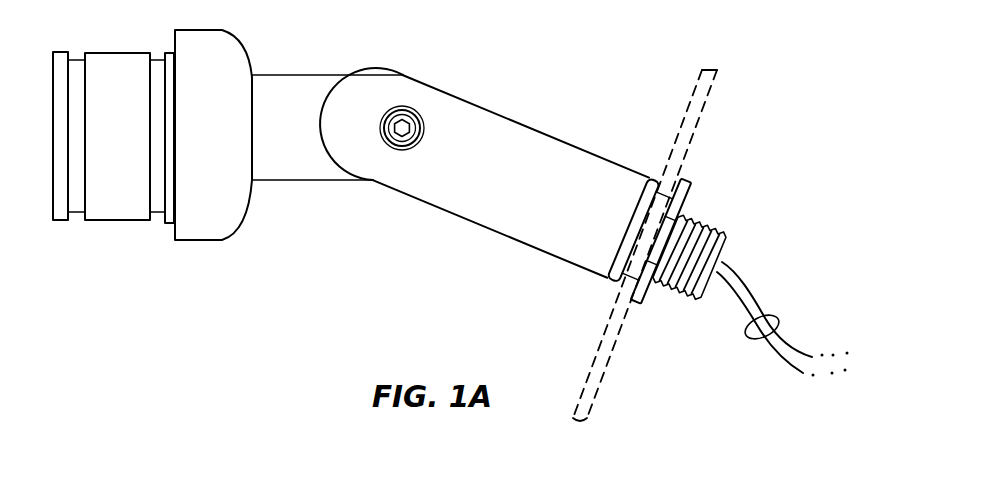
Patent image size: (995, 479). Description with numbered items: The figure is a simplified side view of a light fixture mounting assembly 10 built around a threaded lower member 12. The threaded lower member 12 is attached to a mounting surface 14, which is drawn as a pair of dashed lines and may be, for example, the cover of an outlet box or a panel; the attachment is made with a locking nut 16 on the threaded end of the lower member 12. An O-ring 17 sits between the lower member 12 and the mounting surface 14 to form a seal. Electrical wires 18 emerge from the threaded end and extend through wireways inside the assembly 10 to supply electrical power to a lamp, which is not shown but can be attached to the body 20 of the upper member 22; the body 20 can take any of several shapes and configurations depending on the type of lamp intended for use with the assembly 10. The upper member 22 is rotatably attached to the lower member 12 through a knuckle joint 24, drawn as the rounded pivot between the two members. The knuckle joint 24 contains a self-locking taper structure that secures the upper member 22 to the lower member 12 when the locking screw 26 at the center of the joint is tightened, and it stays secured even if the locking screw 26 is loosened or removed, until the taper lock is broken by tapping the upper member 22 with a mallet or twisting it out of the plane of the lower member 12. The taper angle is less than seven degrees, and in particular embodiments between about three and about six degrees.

The light fixture mounting assembly 10 is at (563, 73).
The threaded lower member 12 is at (572, 140).
The mounting surface 14 is at (707, 114).
The locking nut 16 is at (690, 178).
The O-ring 17 is at (605, 280).
The electrical wires 18 is at (772, 313).
The body 20 is at (105, 53).
The upper member 22 is at (289, 75).
The knuckle joint 24 is at (405, 73).
The locking screw 26 is at (405, 107).